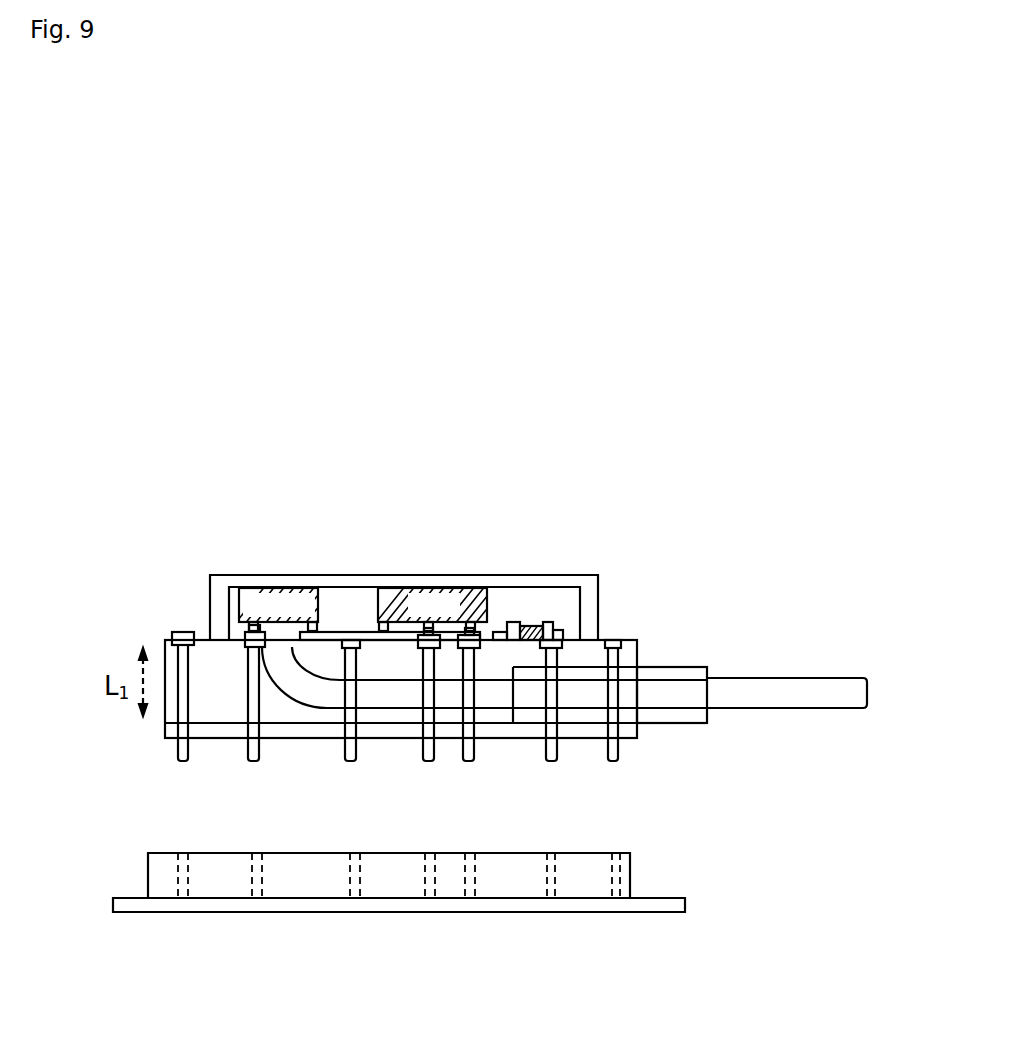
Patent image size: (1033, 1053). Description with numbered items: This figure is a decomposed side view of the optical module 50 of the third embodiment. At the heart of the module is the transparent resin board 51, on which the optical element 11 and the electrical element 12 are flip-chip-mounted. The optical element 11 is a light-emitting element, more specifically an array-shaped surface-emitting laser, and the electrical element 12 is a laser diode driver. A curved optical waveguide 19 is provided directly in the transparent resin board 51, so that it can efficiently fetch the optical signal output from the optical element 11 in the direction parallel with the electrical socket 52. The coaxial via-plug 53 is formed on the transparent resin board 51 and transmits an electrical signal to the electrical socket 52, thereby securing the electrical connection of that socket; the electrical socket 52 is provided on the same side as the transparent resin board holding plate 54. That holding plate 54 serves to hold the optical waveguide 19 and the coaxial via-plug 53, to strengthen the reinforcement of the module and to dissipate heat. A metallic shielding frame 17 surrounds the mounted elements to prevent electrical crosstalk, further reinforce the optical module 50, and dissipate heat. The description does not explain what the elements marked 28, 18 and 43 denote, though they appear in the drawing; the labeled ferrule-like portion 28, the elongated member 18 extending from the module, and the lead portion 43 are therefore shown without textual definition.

The optical element 11 is at (247, 585).
The metallic shielding frame 17 is at (270, 578).
The optical module 50 is at (482, 520).
The electrical element 12 is at (467, 588).
The transparent resin board 51 is at (495, 663).
The sleeve 28 is at (660, 665).
The optical fiber 18 is at (732, 680).
The transparent resin board holding plate 54 is at (637, 740).
The coaxial via-plug 53 is at (182, 708).
The optical waveguide 19 is at (322, 697).
The lead pins 43 is at (272, 707).
The electrical socket 52 is at (632, 868).